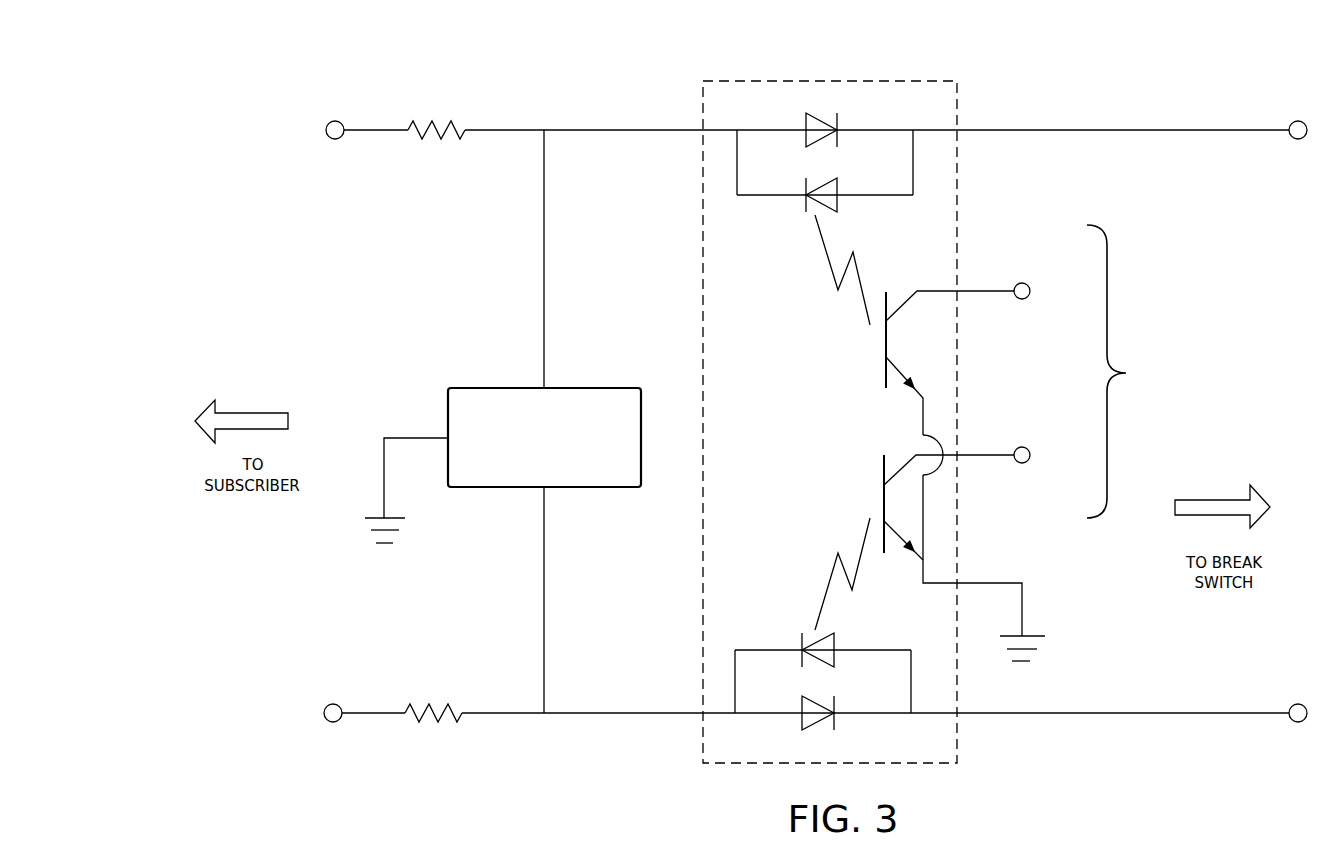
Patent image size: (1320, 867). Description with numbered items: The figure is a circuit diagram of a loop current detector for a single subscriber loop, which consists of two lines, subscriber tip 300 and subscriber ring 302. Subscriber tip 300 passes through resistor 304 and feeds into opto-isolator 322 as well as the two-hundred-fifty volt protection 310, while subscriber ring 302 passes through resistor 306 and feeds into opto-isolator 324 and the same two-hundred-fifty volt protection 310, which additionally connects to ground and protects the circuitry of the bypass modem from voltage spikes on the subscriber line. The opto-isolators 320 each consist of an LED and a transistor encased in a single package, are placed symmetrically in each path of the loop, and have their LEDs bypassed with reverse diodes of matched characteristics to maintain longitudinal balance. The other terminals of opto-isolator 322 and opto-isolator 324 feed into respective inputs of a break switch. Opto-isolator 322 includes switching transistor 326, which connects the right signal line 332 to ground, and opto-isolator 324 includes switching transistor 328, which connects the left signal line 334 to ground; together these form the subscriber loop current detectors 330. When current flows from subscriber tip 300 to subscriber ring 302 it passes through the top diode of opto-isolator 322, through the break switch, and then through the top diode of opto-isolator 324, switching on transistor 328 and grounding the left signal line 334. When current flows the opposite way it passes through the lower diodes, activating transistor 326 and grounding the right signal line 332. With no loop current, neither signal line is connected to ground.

The subscriber tip 300 is at (346, 131).
The subscriber ring 302 is at (335, 717).
The resistor 304 is at (436, 114).
The resistor 306 is at (433, 698).
The 250 volt protection 310 is at (503, 465).
The opto-isolators 320 is at (874, 388).
The opto-isolator 322 is at (825, 219).
The opto-isolator 324 is at (823, 624).
The switching transistor 326 is at (965, 476).
The switching transistor 328 is at (949, 507).
The subscriber loop current detectors 330 is at (1179, 371).
The right signal line 332 is at (1031, 259).
The left signal line 334 is at (1030, 425).